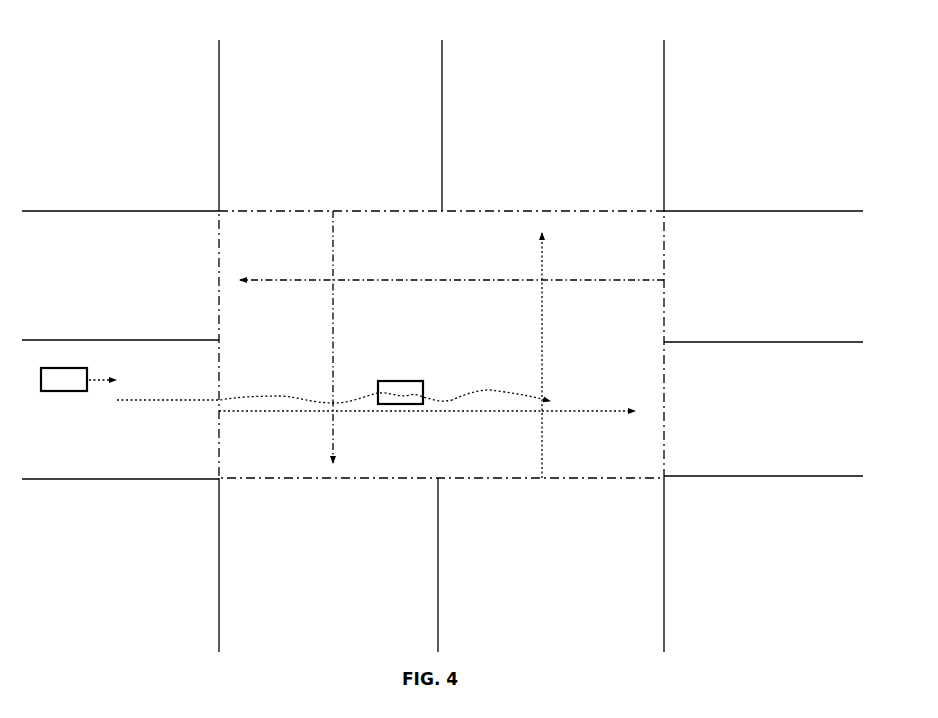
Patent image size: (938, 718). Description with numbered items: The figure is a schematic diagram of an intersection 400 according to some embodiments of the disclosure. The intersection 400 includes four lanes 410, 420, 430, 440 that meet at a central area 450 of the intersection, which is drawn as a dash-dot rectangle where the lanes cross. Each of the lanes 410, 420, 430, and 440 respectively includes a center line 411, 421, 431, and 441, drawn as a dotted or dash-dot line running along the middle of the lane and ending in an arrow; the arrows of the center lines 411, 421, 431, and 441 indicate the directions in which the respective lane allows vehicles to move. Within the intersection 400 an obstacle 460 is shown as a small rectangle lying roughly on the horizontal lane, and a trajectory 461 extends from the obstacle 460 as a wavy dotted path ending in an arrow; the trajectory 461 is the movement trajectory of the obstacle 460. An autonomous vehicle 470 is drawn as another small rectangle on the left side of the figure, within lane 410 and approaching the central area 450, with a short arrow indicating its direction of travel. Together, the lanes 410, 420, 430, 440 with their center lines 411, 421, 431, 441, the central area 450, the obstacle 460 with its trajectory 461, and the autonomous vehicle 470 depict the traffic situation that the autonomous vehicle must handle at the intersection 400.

The intersection 400 is at (756, 124).
The lane 410 is at (237, 413).
The center line 411 is at (292, 413).
The lane 420 is at (763, 343).
The center line 421 is at (604, 282).
The lane 430 is at (441, 125).
The center line 431 is at (333, 218).
The lane 440 is at (441, 565).
The center line 441 is at (540, 414).
The central area 450 is at (218, 231).
The obstacle 460 is at (398, 380).
The trajectory 461 is at (449, 397).
The autonomous vehicle 470 is at (63, 368).